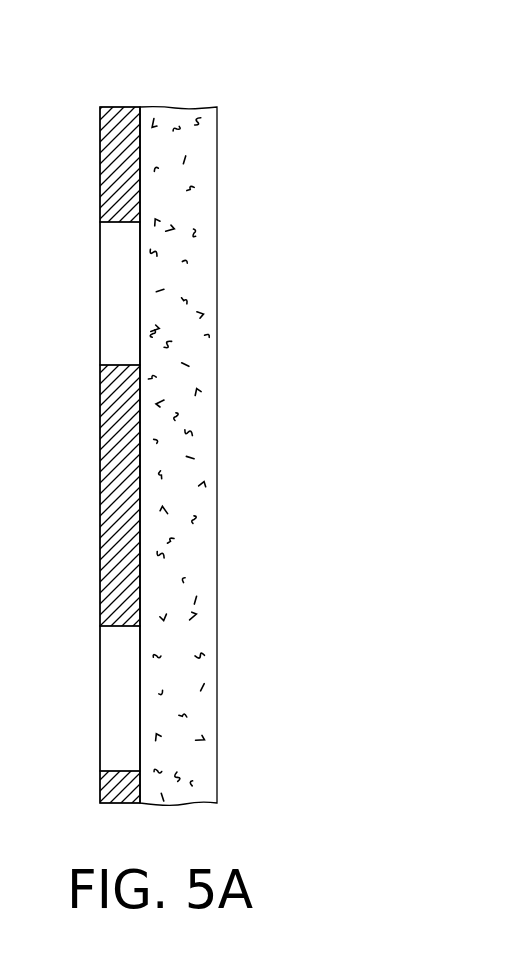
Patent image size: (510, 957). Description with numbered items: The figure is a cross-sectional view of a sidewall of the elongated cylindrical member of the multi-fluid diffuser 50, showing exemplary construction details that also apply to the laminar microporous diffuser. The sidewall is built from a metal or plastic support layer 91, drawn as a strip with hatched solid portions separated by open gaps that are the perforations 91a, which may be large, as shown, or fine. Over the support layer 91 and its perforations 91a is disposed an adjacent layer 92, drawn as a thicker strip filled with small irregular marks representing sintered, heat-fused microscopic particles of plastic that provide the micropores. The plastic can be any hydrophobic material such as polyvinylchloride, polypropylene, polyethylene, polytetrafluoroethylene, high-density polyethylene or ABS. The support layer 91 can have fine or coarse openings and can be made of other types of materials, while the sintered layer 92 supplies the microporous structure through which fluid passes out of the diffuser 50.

The support layer 91 is at (100, 150).
The perforations 91a is at (100, 280).
The second strip / substrate layer 92 is at (217, 287).
The multi-fluid diffuser 50 is at (229, 446).